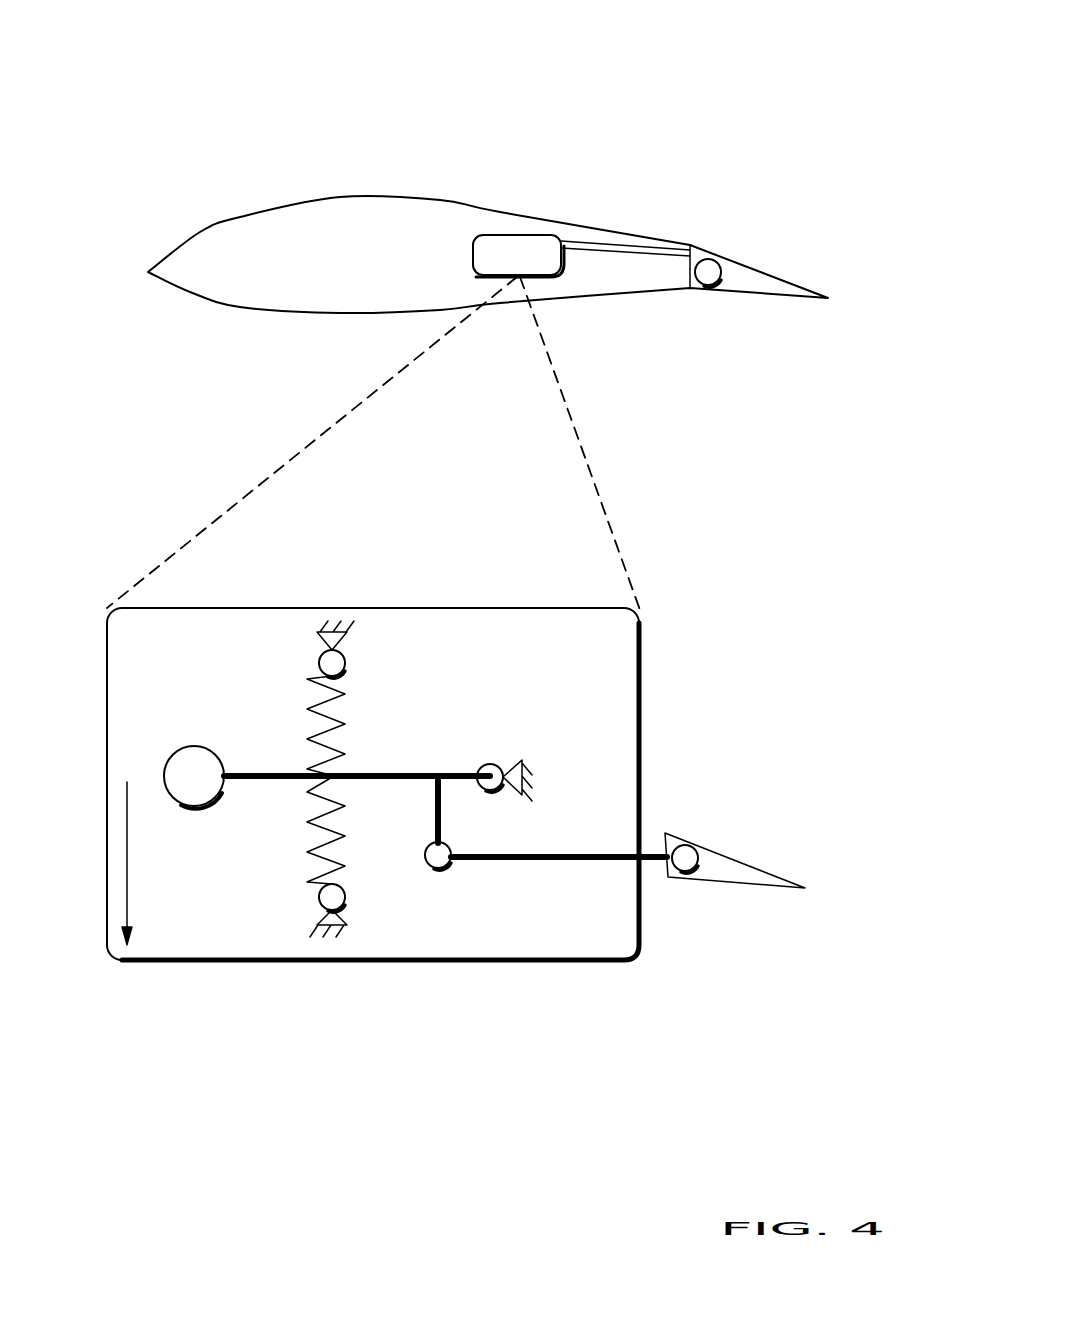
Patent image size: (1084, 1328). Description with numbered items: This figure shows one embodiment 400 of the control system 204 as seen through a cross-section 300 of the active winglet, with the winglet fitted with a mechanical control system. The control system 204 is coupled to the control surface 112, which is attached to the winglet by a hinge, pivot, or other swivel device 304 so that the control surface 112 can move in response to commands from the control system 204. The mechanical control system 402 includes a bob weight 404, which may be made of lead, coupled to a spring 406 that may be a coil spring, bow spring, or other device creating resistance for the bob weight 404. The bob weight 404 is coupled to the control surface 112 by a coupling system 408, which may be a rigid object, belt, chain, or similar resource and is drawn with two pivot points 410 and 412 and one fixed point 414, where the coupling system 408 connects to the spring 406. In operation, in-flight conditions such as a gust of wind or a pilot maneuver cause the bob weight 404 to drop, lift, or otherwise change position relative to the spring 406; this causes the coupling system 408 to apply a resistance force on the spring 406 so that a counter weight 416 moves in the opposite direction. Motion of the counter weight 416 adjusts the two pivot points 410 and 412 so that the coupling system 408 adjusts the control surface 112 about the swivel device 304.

The embodiment of the control system 400 is at (738, 52).
The cross-section 300 is at (455, 185).
The control system 204 is at (581, 256).
The control surface 112 is at (743, 272).
The swivel device 304 is at (706, 275).
The mechanical control system 402 is at (694, 622).
The bob weight 404 is at (195, 747).
The spring 406 is at (343, 718).
The coupling system 408 is at (480, 858).
The pivot point 410 is at (438, 774).
The pivot point 412 is at (438, 855).
The fixed point 414 is at (335, 778).
The counter weight 416 is at (492, 777).